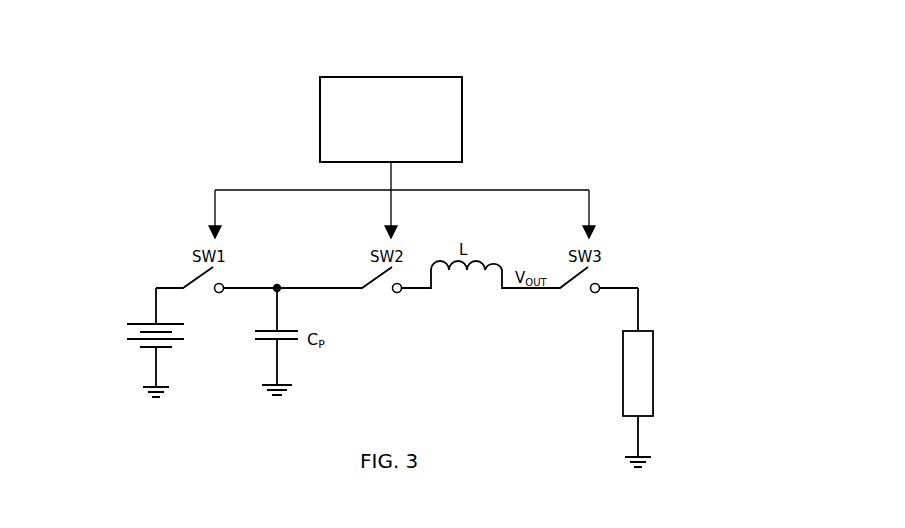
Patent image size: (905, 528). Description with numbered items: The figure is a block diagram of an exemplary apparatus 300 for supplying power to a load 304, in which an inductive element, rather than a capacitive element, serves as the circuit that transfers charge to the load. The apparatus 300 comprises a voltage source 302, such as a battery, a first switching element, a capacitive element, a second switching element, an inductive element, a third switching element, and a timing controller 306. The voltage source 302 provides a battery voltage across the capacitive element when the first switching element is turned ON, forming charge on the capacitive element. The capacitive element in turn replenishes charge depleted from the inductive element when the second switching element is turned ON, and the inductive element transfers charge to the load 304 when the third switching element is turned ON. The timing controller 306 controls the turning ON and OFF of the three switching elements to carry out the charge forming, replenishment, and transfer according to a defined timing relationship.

The apparatus 300 is at (620, 80).
The voltage source 302 is at (142, 322).
The load 304 is at (648, 330).
The timing controller 306 is at (320, 113).